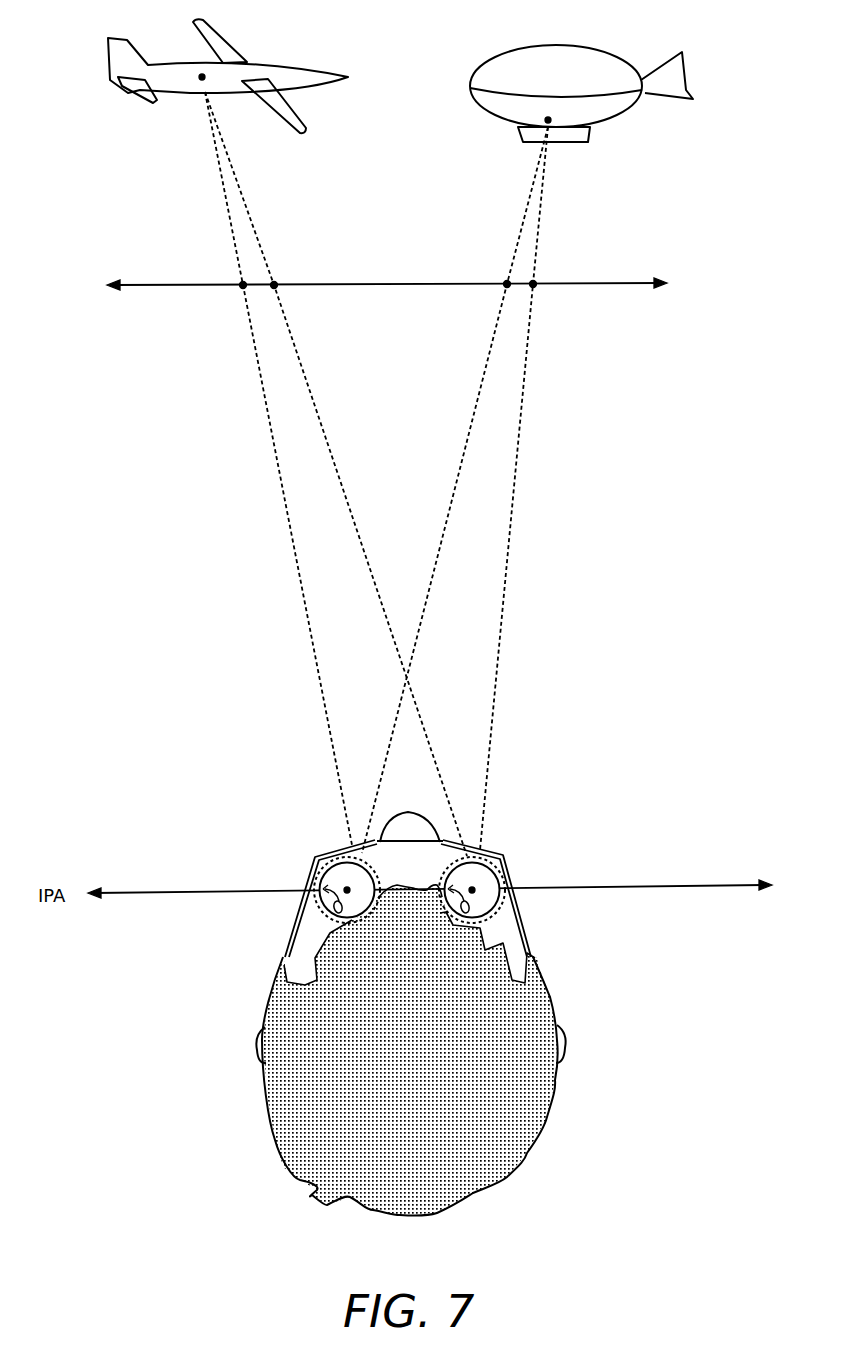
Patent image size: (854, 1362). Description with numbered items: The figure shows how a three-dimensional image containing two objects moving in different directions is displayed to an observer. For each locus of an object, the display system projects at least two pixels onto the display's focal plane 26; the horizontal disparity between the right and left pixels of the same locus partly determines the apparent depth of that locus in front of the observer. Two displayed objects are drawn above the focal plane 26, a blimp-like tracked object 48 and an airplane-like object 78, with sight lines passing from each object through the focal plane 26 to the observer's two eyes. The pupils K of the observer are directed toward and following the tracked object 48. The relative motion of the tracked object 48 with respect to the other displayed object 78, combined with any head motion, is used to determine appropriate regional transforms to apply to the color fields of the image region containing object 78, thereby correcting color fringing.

The object 78 is at (230, 84).
The tracked object 48 is at (608, 80).
The focal plane 26 is at (374, 279).
The pupils K is at (356, 860).
The eye center of rotation C is at (416, 896).